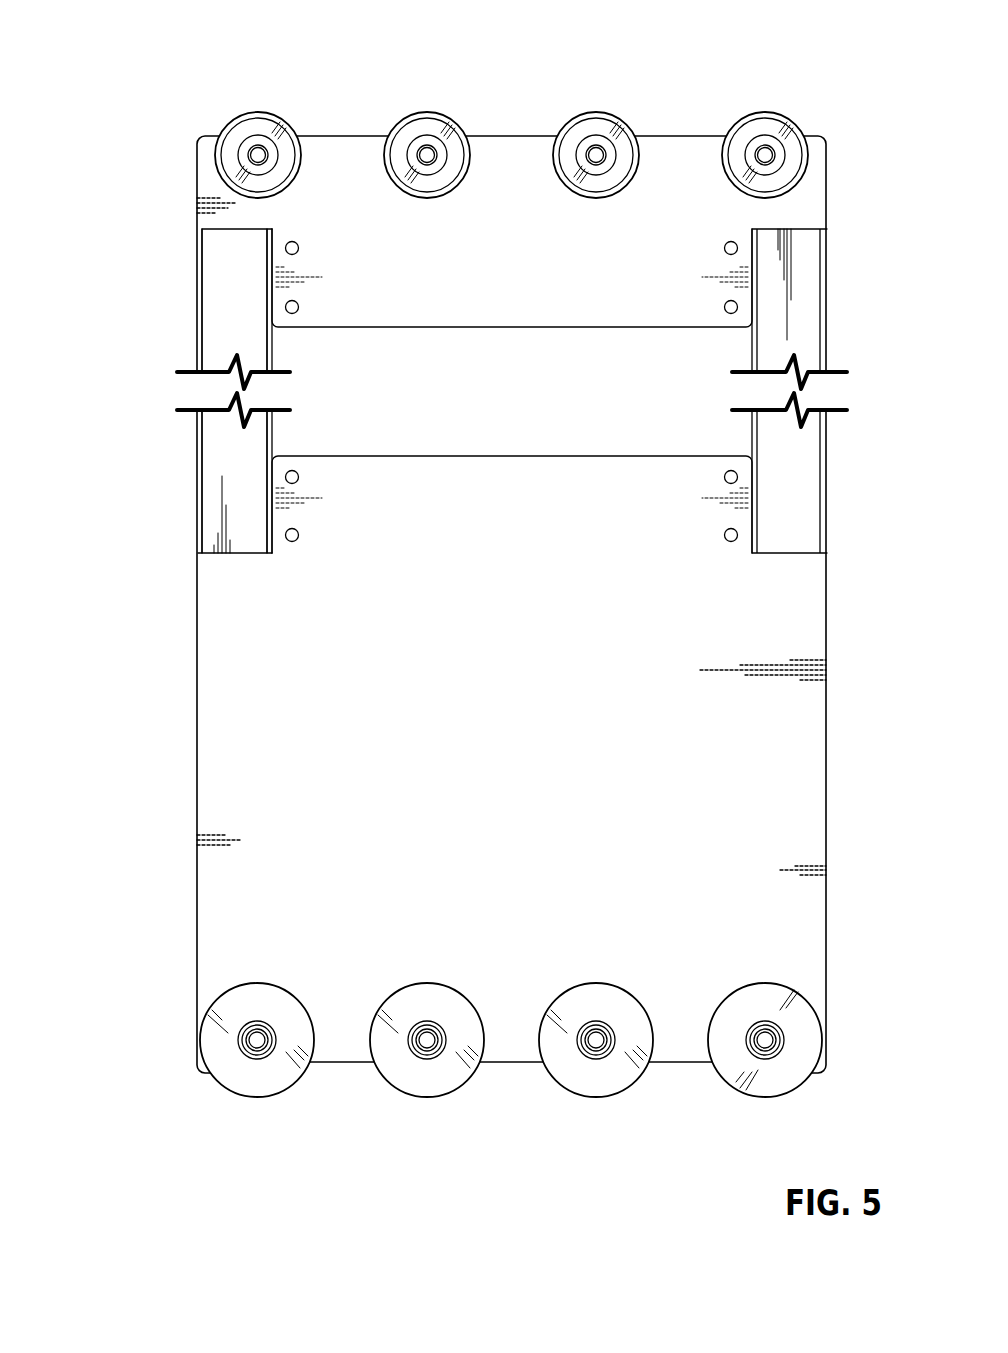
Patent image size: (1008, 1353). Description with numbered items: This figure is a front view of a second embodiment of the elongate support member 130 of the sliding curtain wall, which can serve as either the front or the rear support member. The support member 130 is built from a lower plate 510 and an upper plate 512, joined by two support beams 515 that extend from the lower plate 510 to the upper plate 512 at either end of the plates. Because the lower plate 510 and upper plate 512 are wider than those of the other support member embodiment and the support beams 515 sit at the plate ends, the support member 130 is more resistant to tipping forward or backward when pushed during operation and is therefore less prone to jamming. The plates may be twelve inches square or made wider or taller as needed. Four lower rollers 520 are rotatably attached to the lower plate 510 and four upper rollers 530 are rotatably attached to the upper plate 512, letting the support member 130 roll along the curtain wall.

The support member 130 is at (154, 438).
The lower plate 510 is at (307, 648).
The upper plate 512 is at (298, 262).
The support beams 515 is at (748, 342).
The lower rollers 520 is at (768, 1097).
The upper rollers 530 is at (765, 112).